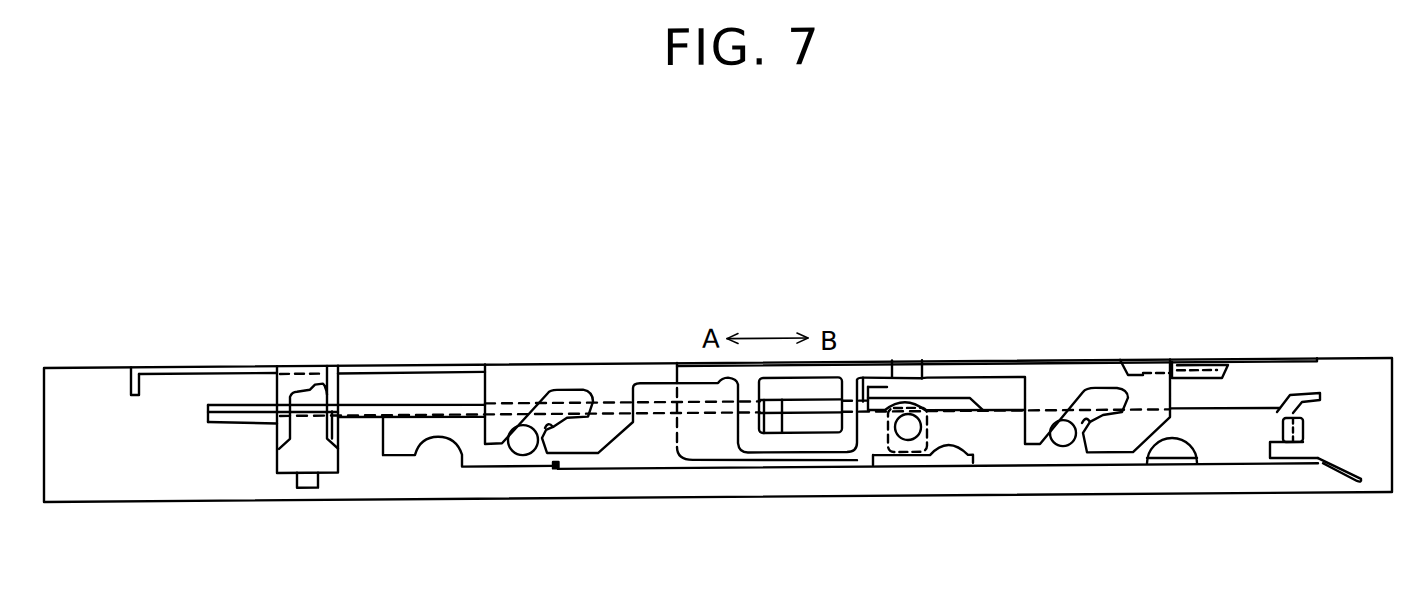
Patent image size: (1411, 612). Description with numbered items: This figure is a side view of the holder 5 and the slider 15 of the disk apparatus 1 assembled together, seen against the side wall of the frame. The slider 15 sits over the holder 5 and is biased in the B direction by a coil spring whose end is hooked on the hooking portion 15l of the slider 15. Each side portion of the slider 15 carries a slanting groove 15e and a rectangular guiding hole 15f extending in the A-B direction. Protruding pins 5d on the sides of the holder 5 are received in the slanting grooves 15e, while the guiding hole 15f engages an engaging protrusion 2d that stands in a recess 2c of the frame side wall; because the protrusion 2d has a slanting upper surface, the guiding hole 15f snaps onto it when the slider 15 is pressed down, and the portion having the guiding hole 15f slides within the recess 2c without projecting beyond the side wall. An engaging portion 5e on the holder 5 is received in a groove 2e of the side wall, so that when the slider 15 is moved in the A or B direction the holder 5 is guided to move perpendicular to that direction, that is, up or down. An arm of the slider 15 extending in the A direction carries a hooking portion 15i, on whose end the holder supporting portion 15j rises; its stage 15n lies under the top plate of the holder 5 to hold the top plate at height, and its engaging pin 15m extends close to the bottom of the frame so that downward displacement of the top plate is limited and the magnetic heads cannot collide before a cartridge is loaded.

The disk apparatus 1 is at (968, 342).
The recess 2c is at (682, 460).
The engaging protrusion 2d is at (772, 431).
The groove 2e is at (917, 472).
The holder 5 is at (1222, 478).
The protruding pin 5d is at (517, 447).
The engaging portion 5e is at (908, 435).
The slider 15 is at (1105, 361).
The slanting groove 15e is at (550, 436).
The guiding hole 15f is at (823, 430).
The hooking portion 15i is at (335, 431).
The holder supporting portion 15j is at (325, 389).
The hooking portion 15l is at (133, 399).
The engaging pin 15m is at (307, 486).
The stage 15n is at (310, 391).